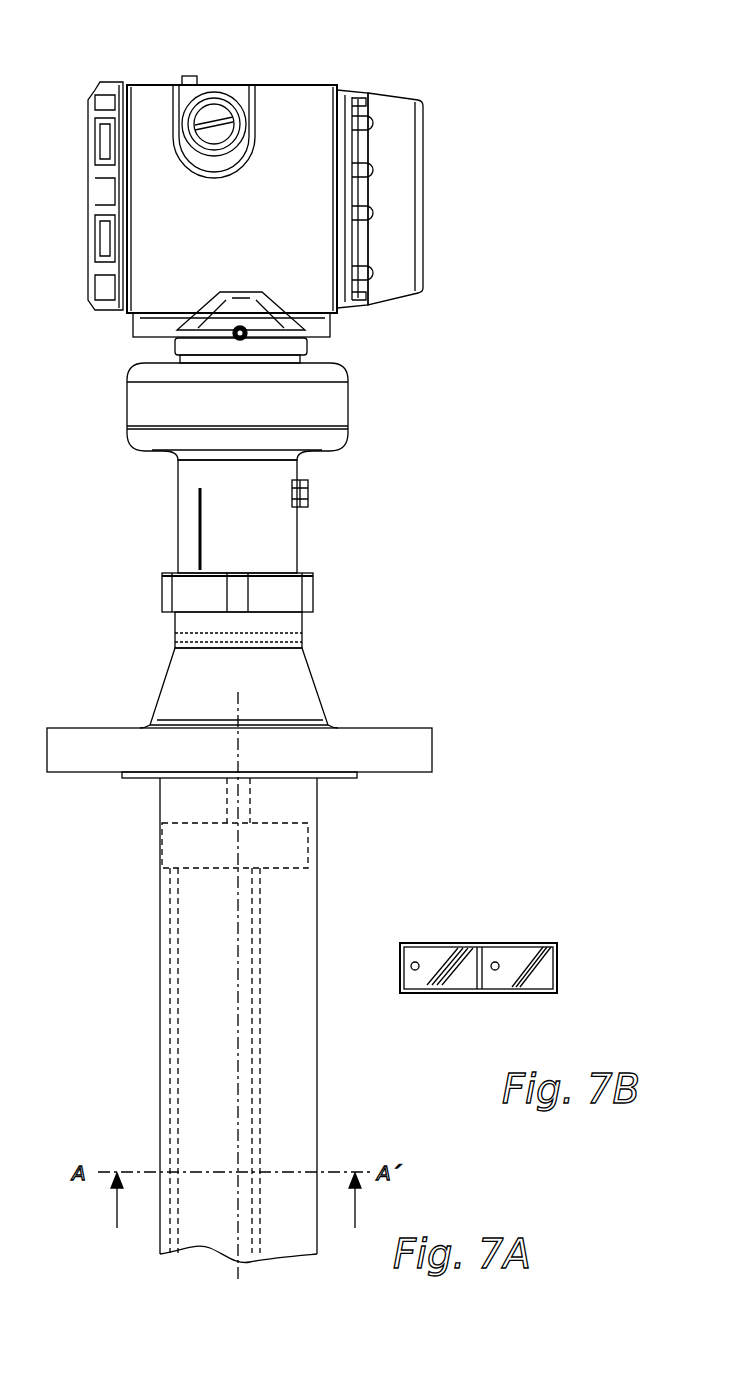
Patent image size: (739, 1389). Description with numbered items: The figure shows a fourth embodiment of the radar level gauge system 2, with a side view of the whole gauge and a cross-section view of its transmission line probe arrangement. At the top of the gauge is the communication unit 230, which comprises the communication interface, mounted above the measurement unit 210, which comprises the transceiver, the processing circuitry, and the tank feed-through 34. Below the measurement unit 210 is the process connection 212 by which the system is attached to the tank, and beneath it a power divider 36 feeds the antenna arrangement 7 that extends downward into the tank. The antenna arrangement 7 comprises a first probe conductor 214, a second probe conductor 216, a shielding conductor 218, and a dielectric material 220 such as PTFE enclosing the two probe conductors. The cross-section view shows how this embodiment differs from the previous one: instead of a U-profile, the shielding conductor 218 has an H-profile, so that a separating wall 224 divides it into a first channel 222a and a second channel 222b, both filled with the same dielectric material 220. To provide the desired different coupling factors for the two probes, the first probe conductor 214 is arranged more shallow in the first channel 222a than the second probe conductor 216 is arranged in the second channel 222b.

In FIG. 7A, the radar level gauge system 2 is at (445, 63).
In FIG. 7A, the communication unit 230 is at (322, 78).
In FIG. 7A, the measurement unit 210 is at (405, 421).
In FIG. 7A, the tank feed-through 34 is at (352, 458).
In FIG. 7A, the process connection 212 is at (398, 643).
In FIG. 7A, the power divider 36 is at (308, 847).
In FIG. 7A, the shielding conductor 218 is at (317, 1065).
In FIG. 7B, the shielding conductor 218 is at (518, 932).
In FIG. 7A, the first probe conductor 214 is at (172, 973).
In FIG. 7B, the first probe conductor 214 is at (418, 964).
In FIG. 7A, the second probe conductor 216 is at (257, 933).
In FIG. 7B, the second probe conductor 216 is at (499, 964).
In FIG. 7B, the dielectric material 220 is at (407, 978).
In FIG. 7B, the first channel 222a is at (452, 988).
In FIG. 7B, the second channel 222b is at (518, 988).
In FIG. 7B, the separating wall 224 is at (490, 943).
In FIG. 7B, the antenna arrangement 7 is at (390, 916).